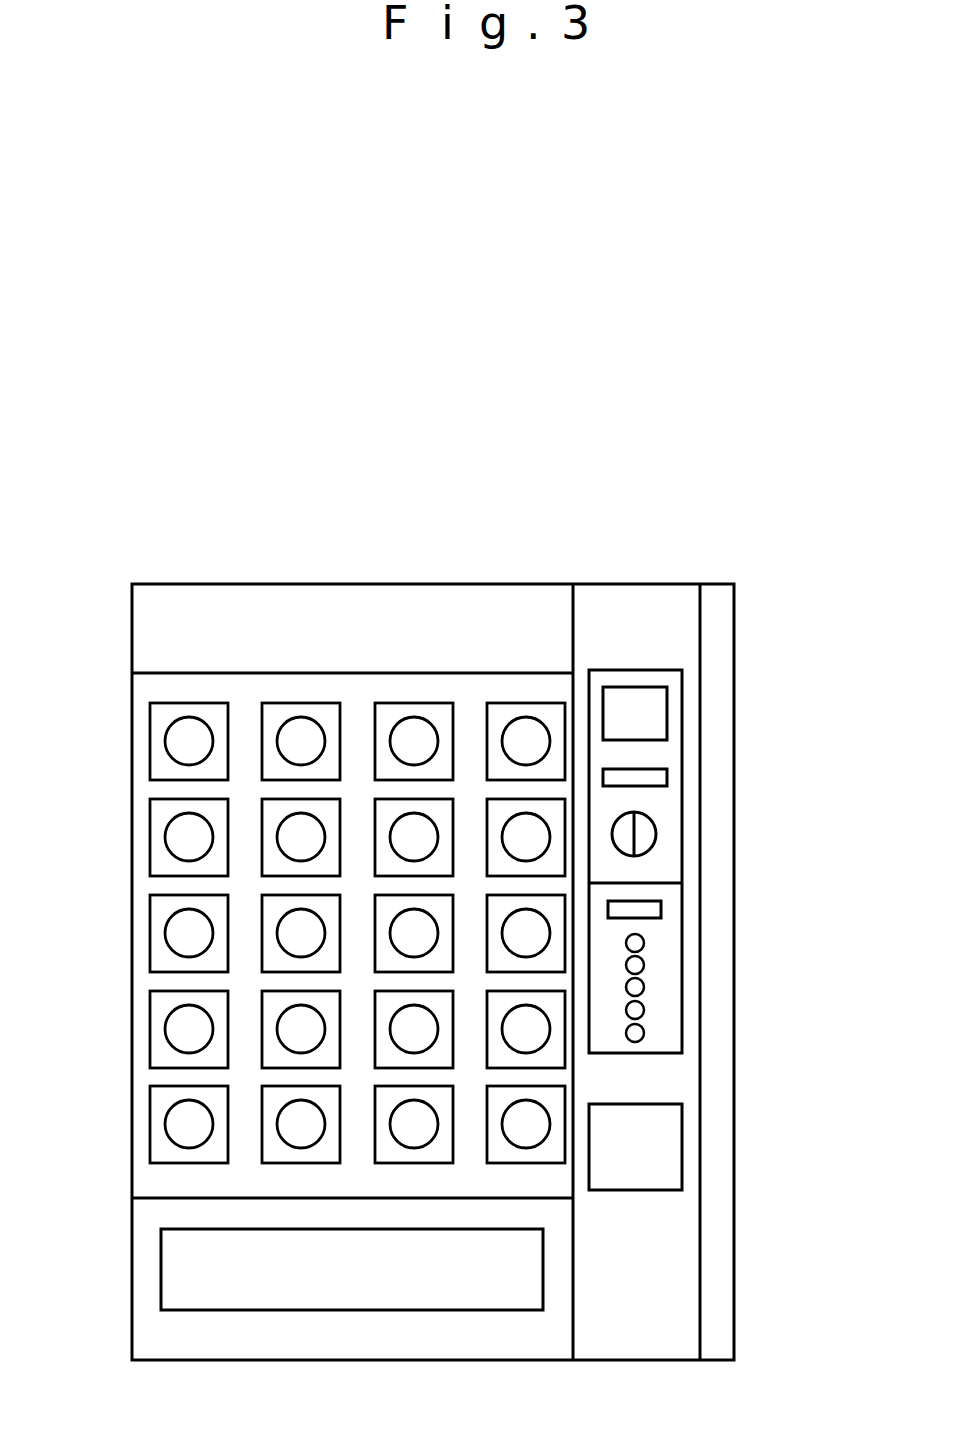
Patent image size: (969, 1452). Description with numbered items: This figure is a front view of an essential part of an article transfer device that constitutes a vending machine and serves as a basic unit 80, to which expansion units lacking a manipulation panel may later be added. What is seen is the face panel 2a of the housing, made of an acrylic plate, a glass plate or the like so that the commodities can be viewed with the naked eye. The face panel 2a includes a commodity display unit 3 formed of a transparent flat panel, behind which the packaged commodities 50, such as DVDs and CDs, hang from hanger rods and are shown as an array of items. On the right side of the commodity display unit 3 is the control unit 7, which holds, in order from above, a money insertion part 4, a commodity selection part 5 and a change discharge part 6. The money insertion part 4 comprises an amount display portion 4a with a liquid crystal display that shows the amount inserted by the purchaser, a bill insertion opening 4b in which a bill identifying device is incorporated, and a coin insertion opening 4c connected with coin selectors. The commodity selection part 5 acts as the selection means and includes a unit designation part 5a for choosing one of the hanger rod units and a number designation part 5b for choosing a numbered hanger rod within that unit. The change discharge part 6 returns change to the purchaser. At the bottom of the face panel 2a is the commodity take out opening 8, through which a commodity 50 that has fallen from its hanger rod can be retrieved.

The basic unit 80 is at (750, 481).
The face panel 2a is at (205, 622).
The commodity display unit 3 is at (150, 690).
The packaged commodities 50 is at (303, 732).
The money insertion part 4 is at (852, 703).
The amount display portion 4a is at (653, 712).
The bill insertion opening 4b is at (653, 777).
The coin insertion opening 4c is at (656, 832).
The commodity selection part 5 is at (852, 907).
The unit designation part 5a is at (652, 908).
The number designation part 5b is at (654, 932).
The change discharge part 6 is at (662, 1153).
The control unit 7 is at (672, 1268).
The commodity take out opening 8 is at (175, 1272).